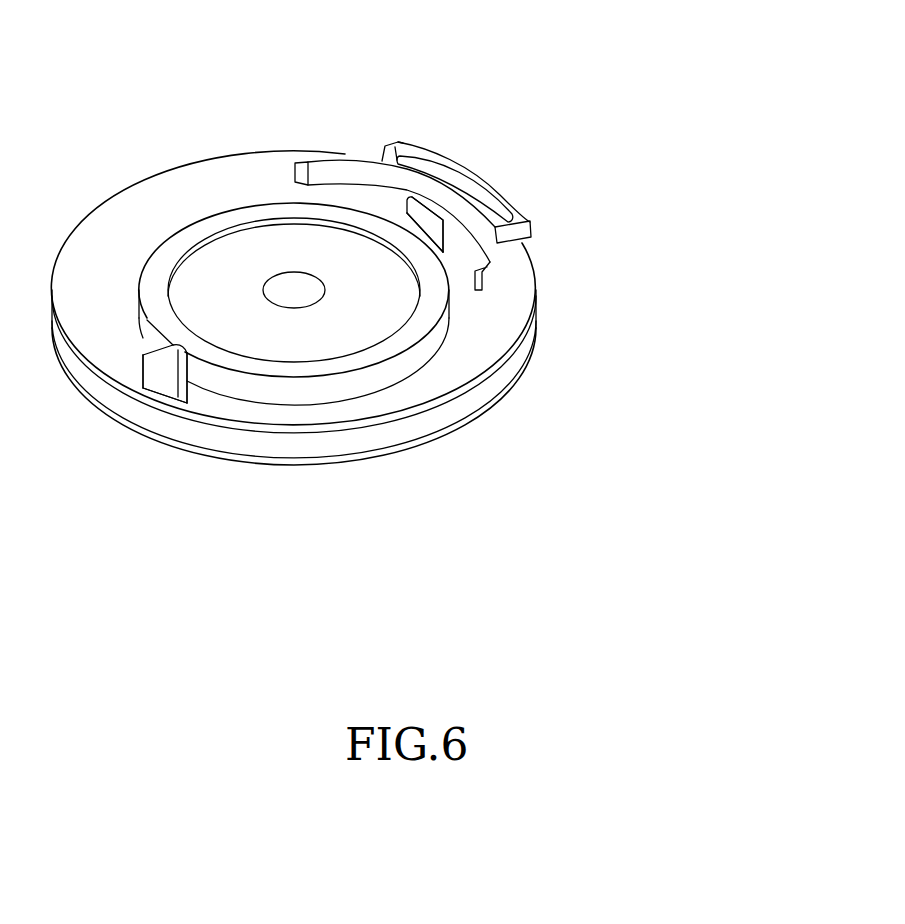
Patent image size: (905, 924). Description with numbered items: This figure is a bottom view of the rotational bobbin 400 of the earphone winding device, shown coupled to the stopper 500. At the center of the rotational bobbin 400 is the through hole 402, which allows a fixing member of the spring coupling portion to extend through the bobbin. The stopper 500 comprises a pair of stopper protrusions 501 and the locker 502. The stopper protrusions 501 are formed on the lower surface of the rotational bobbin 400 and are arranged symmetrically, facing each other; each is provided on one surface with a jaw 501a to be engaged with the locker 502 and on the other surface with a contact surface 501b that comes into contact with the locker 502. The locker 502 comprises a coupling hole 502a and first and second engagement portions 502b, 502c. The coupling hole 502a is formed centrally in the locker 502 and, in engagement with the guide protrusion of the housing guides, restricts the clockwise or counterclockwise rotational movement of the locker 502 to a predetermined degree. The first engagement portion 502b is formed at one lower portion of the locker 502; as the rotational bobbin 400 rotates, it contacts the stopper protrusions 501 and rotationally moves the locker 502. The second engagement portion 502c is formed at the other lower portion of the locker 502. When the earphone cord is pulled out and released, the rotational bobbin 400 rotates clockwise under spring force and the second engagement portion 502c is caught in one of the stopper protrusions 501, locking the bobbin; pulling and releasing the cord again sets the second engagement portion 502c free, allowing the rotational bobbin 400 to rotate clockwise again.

The rotational bobbin 400 is at (122, 421).
The through hole 402 is at (312, 297).
The stopper 500 is at (715, 138).
The stopper protrusions 501 is at (632, 330).
The jaw 501a is at (445, 250).
The contact surface 501b is at (437, 248).
The locker 502 is at (632, 33).
The coupling hole 502a is at (478, 198).
The first engagement portion 502b is at (352, 167).
The second engagement portion 502c is at (495, 266).